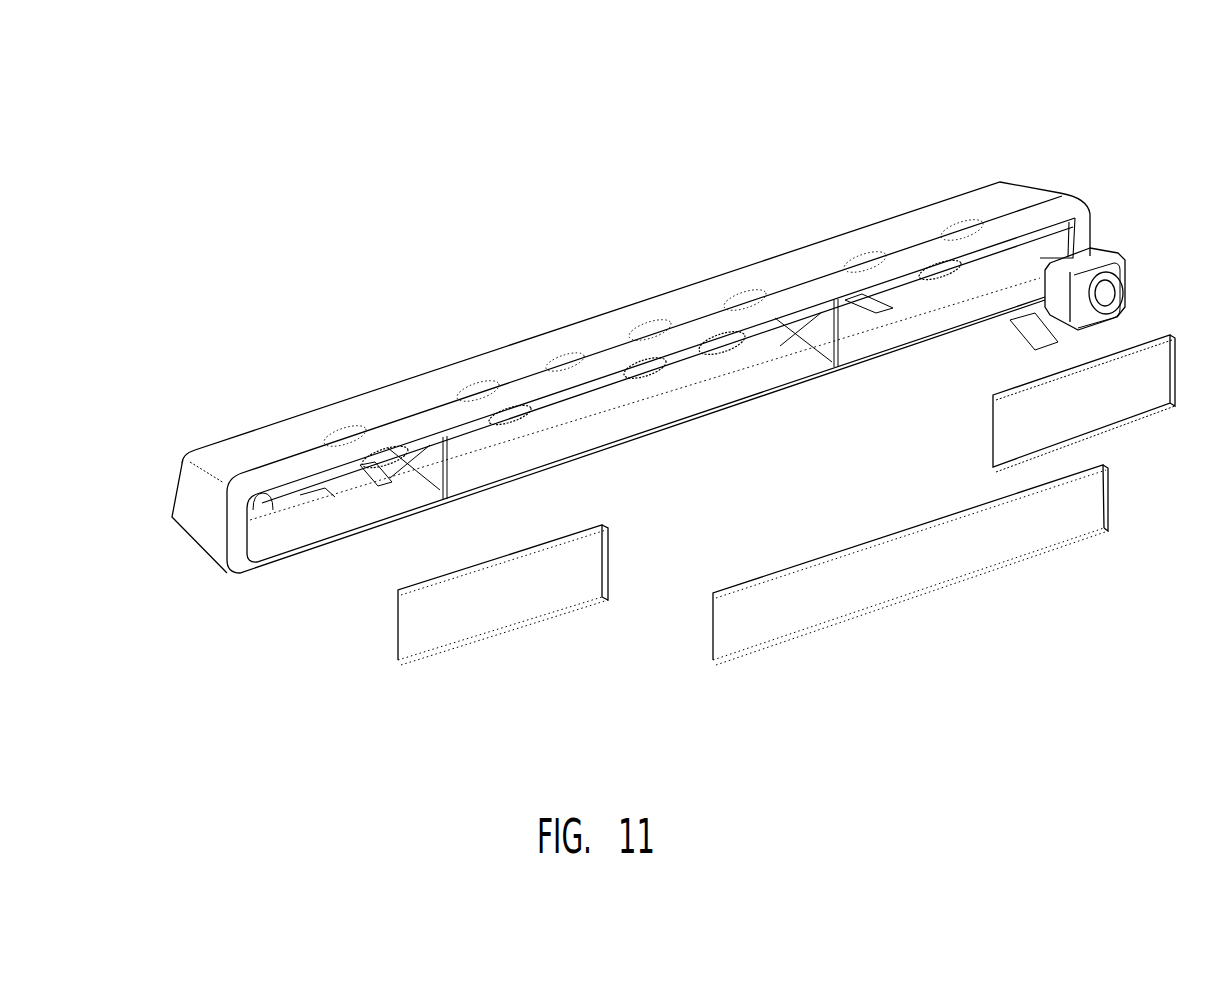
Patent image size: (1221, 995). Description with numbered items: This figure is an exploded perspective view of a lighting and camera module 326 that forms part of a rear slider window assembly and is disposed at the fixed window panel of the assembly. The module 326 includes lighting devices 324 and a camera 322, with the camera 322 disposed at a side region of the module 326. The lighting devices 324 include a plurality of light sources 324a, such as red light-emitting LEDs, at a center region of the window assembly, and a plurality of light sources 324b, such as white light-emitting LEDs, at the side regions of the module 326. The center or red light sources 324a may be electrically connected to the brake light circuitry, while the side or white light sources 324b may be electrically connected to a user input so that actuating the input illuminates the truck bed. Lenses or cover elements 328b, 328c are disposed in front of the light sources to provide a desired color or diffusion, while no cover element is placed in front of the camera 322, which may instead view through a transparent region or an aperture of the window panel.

The lighting and camera module 326 is at (703, 203).
The lighting devices 324 is at (522, 358).
The light sources 324a is at (674, 375).
The light sources 324b is at (313, 498).
The camera 322 is at (1084, 272).
The lens or cover element 328b is at (927, 572).
The lens or cover element 328c is at (482, 620).